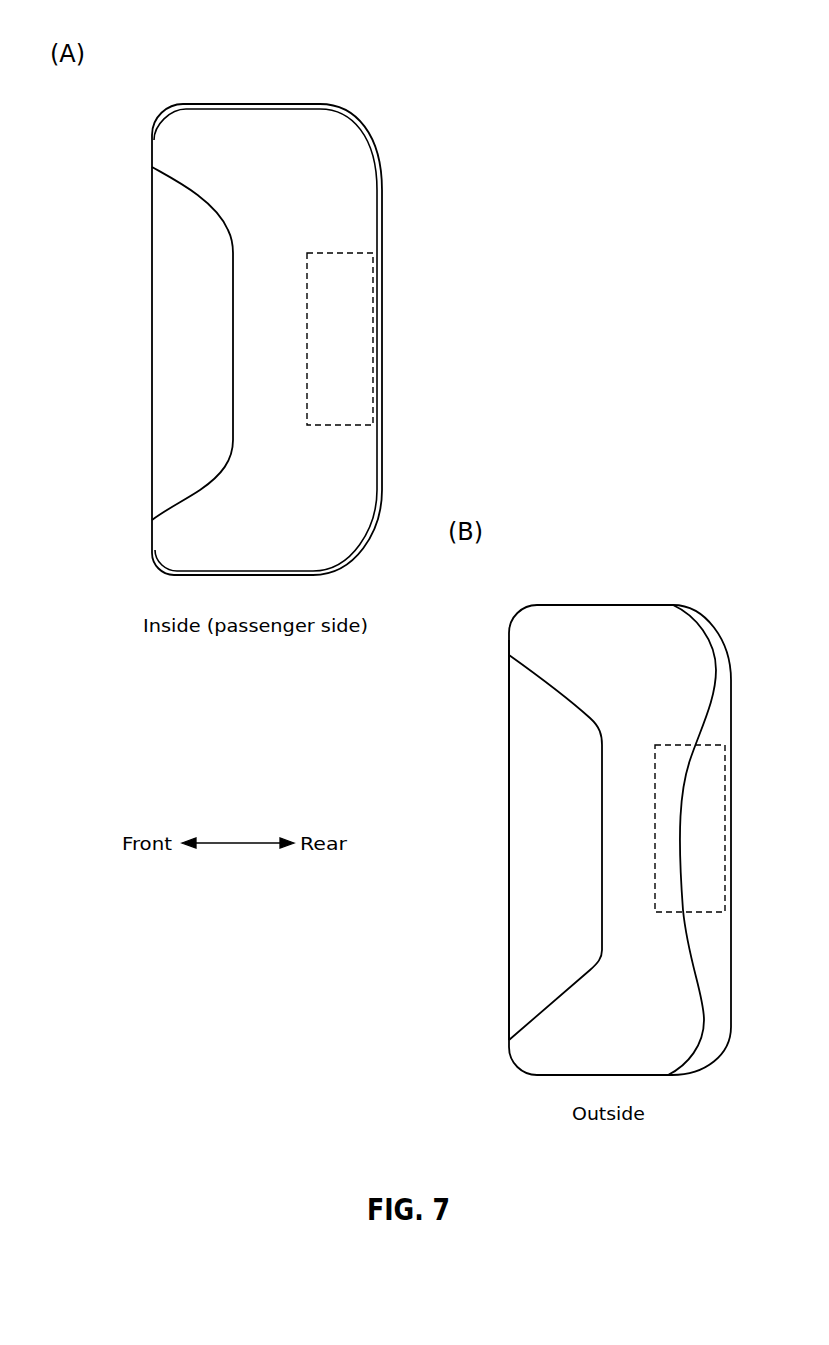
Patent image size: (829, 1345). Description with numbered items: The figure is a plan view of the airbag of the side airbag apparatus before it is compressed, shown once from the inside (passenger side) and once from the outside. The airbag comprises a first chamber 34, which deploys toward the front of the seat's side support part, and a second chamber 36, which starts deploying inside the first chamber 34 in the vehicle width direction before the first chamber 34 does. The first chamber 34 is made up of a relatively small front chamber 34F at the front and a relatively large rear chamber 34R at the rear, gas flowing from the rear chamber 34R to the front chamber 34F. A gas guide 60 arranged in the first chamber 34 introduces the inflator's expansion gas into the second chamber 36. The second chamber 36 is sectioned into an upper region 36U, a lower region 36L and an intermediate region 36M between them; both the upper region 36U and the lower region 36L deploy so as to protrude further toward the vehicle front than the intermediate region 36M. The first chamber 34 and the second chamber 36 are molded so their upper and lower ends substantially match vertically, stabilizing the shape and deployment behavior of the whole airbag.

The first chamber 34 is at (398, 589).
The front chamber 34F is at (521, 889).
The rear chamber 34R is at (612, 934).
The second chamber 36 is at (332, 537).
The upper region 36U is at (192, 138).
The intermediate region 36M is at (268, 358).
The lower region 36L is at (175, 541).
The gas guide 60 is at (338, 253).